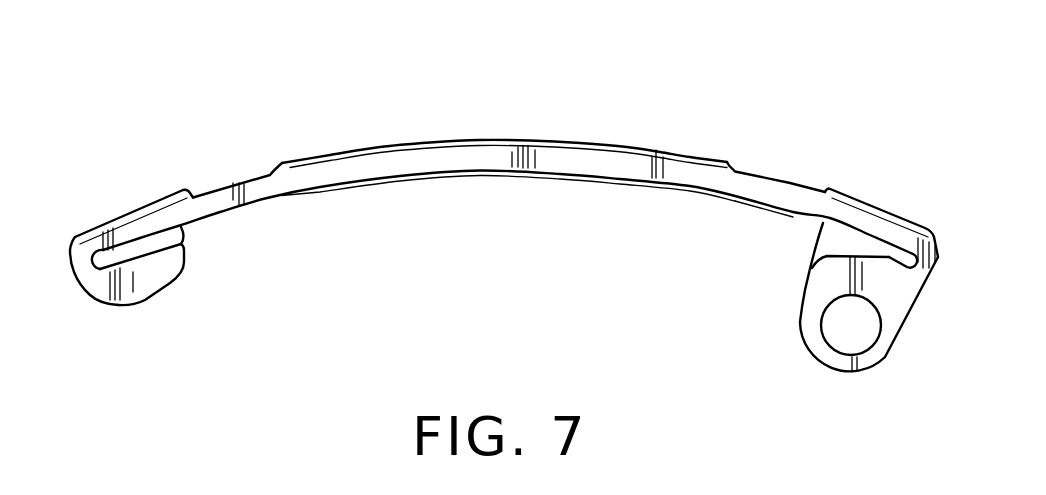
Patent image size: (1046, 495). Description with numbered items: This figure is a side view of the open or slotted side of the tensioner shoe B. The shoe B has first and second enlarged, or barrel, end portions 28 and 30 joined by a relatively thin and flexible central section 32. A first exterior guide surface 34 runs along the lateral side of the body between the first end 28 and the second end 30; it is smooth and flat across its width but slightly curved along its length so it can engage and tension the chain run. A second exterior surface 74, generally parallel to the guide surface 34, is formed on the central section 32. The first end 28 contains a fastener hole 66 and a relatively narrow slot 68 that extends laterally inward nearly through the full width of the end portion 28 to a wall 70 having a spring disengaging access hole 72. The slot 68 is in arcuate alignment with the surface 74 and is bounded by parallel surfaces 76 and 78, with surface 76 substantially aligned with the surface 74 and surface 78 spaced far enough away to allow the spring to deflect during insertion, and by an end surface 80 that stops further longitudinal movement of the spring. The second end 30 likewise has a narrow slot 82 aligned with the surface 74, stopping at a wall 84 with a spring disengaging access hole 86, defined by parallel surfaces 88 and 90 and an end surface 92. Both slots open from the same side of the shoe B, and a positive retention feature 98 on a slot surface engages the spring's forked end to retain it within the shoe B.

The shoe B is at (501, 120).
The first enlarged end portion 28 is at (853, 172).
The second enlarged end portion 30 is at (115, 181).
The central section 32 is at (370, 130).
The first exterior guide surface 34 is at (632, 130).
The fastener hole 66 is at (837, 327).
The slot 68 is at (786, 239).
The wall 70 is at (837, 242).
The spring disengaging access hole 72 is at (900, 252).
The second exterior surface 74 is at (462, 189).
The surface 76 is at (863, 233).
The surface 78 is at (857, 258).
The end surface 80 is at (922, 263).
The slot 82 is at (201, 245).
The wall 84 is at (165, 236).
The spring disengaging access hole 86 is at (106, 252).
The surface 88 is at (130, 237).
The surface 90 is at (155, 264).
The end surface 92 is at (97, 260).
The positive retention feature 98 is at (887, 290).